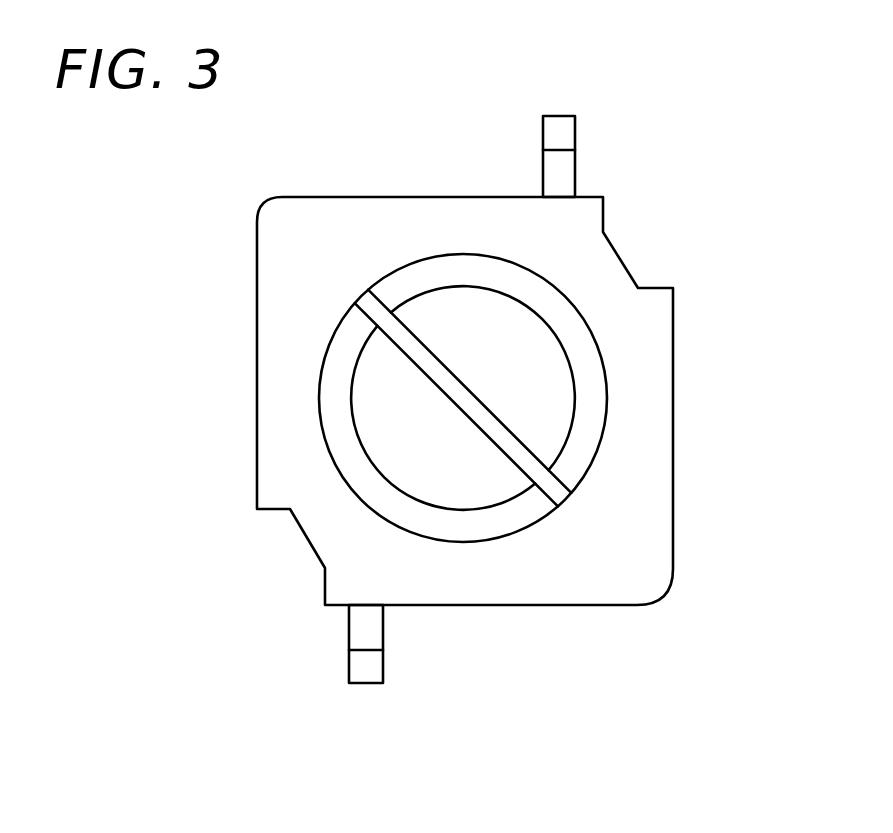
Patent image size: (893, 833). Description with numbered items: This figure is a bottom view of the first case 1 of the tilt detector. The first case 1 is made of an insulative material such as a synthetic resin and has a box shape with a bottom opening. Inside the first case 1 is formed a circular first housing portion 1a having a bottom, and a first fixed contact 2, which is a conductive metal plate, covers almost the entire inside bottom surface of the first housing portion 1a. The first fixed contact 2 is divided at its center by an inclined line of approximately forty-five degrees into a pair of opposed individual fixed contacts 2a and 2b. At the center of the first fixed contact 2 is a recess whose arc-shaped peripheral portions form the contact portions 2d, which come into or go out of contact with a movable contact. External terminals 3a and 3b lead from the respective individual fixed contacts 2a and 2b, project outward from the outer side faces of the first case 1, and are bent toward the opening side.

The first case 1 is at (341, 186).
The first housing portion 1a is at (334, 346).
The first fixed contact 2 is at (478, 405).
The individual fixed contact 2a is at (557, 413).
The individual fixed contact 2b is at (495, 485).
The contact portions 2d is at (368, 458).
The external terminal 3a is at (553, 132).
The external terminal 3b is at (372, 670).